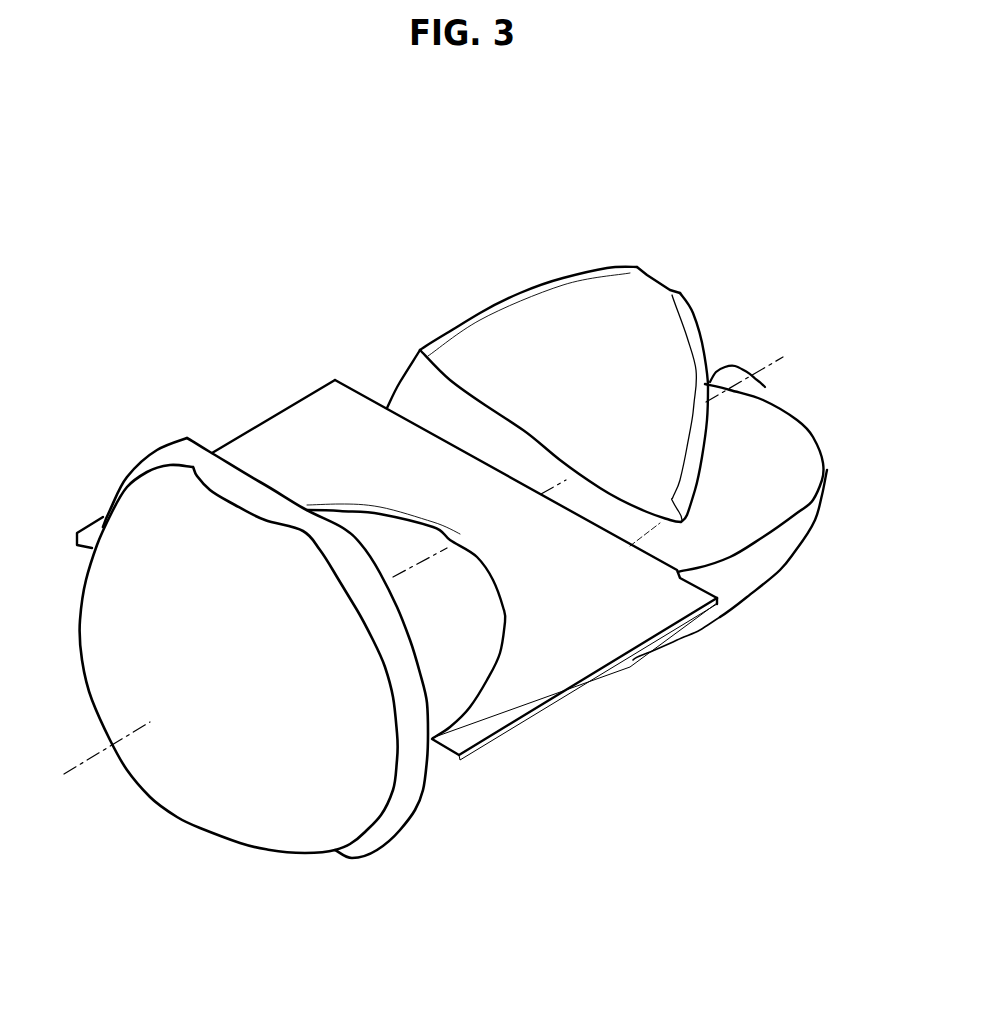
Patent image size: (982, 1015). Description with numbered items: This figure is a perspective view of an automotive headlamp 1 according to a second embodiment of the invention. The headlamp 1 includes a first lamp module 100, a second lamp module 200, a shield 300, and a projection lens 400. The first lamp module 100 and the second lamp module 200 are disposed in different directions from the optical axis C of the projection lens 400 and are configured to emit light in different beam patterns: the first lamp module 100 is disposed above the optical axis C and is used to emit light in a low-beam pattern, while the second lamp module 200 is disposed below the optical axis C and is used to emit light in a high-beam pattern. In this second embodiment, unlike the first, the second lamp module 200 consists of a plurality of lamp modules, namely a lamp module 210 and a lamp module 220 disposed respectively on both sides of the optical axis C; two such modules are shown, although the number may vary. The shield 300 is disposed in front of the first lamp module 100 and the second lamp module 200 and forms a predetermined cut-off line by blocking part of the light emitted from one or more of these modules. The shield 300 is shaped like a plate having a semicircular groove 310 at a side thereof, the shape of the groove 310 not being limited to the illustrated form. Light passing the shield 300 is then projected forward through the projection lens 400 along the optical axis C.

The automotive headlamp 1 is at (541, 234).
The first lamp module 100 is at (698, 330).
The second lamp module 200 is at (857, 382).
The lamp module 210 is at (813, 428).
The lamp module 220 is at (733, 367).
The shield 300 is at (467, 733).
The semicircular groove 310 is at (381, 537).
The projection lens 400 is at (202, 812).
The optical axis C is at (413, 570).